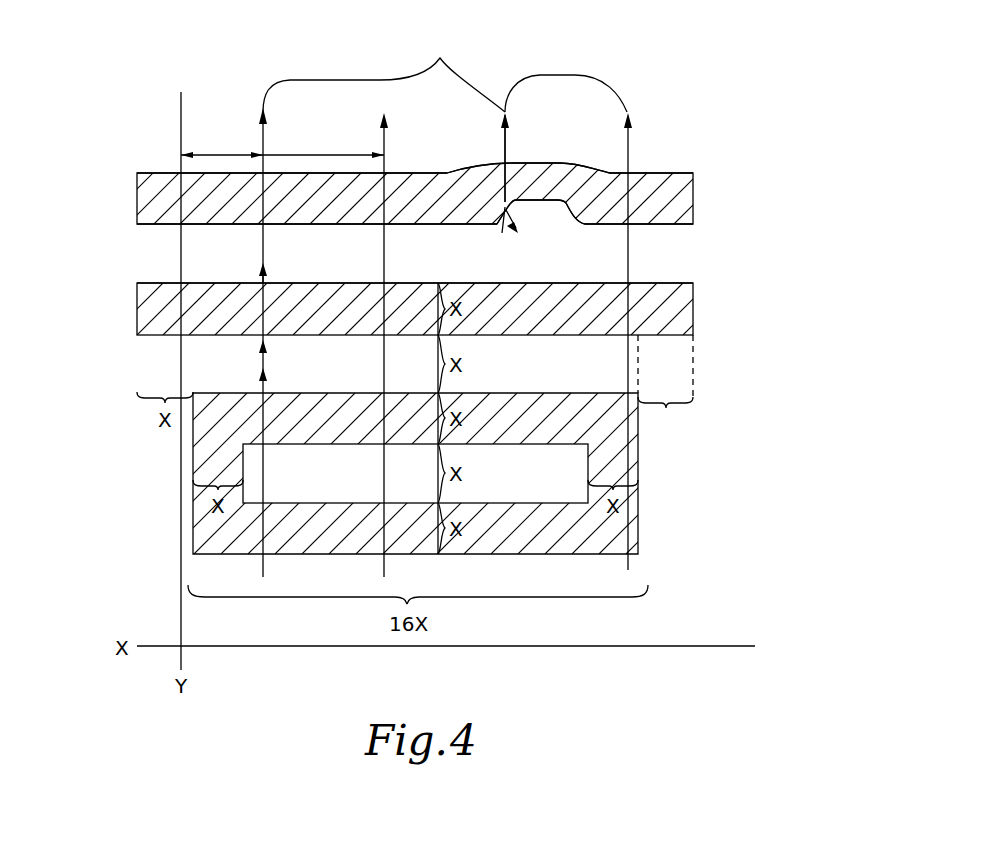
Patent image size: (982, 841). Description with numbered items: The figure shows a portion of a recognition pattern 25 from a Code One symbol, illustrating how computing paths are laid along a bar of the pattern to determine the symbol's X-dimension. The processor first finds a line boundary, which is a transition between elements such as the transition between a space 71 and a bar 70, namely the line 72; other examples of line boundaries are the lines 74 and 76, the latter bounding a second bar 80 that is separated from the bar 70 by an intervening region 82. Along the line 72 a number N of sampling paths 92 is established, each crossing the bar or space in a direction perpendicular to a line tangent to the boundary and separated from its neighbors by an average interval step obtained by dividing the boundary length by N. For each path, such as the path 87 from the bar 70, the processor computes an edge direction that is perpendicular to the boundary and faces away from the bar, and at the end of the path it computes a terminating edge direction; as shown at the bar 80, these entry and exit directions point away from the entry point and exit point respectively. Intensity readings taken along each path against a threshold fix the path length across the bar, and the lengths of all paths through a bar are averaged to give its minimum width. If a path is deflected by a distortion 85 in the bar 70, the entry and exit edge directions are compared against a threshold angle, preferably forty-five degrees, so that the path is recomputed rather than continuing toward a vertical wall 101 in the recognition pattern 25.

The recognition pattern 25 is at (752, 317).
The bar 70 is at (130, 197).
The space 71 is at (137, 148).
The line 72 is at (693, 173).
The line 74 is at (693, 223).
The line 76 is at (693, 284).
The bar 80 is at (130, 307).
The gap between layers 82 is at (145, 252).
The distortion 85 is at (548, 212).
The path 87 is at (263, 140).
The sampling paths 92 is at (463, 304).
The vertical wall 101 is at (208, 462).